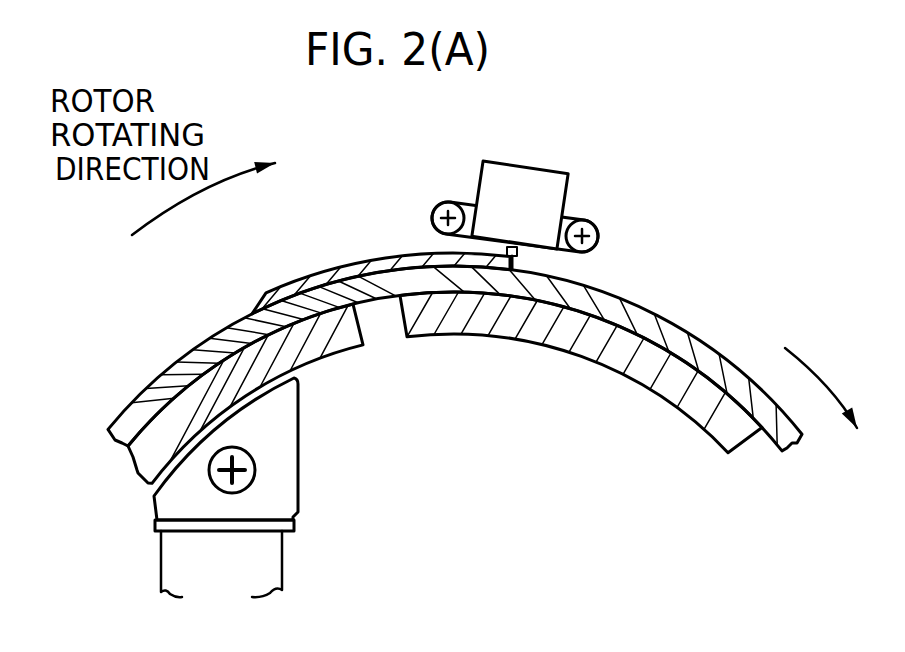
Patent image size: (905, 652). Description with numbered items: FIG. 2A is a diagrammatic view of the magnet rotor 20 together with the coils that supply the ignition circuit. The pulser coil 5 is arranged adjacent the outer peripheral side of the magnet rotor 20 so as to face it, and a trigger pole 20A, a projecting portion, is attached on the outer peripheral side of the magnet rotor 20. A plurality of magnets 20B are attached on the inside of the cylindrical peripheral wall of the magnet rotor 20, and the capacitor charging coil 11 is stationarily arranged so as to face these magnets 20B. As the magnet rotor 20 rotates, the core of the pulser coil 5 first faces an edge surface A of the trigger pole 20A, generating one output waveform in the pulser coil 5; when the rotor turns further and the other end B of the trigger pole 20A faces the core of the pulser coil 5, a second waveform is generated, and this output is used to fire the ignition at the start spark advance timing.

The pulser coil 5 is at (520, 163).
The magnet rotor 20 is at (668, 320).
The trigger pole 20A is at (303, 278).
The magnet 20B is at (340, 352).
The capacitor charging coil 11 is at (285, 563).
The edge surface A is at (513, 262).
The other end B is at (252, 306).